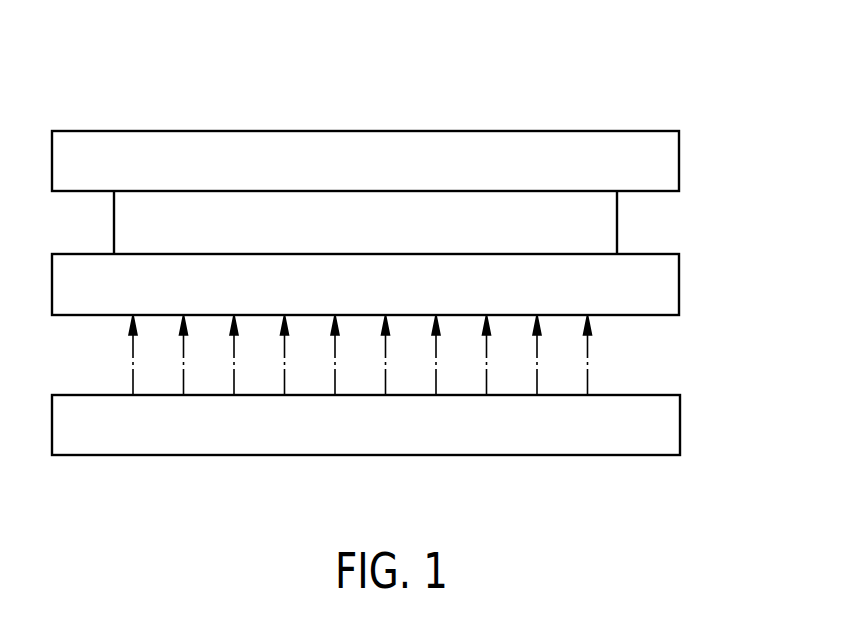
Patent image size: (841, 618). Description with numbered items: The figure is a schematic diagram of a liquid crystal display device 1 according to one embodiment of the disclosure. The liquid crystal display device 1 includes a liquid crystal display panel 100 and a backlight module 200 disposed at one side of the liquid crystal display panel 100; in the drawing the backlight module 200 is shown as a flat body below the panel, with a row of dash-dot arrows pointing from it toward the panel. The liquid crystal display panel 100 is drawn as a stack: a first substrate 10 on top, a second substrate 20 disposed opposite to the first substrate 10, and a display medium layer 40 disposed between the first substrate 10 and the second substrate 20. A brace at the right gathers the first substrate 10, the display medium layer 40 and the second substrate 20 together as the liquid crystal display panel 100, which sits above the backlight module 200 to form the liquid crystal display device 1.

The liquid crystal display device 1 is at (108, 62).
The liquid crystal display panel 100 is at (746, 149).
The first substrate 10 is at (672, 162).
The display medium layer 40 is at (610, 226).
The second substrate 20 is at (672, 289).
The backlight module 200 is at (667, 429).